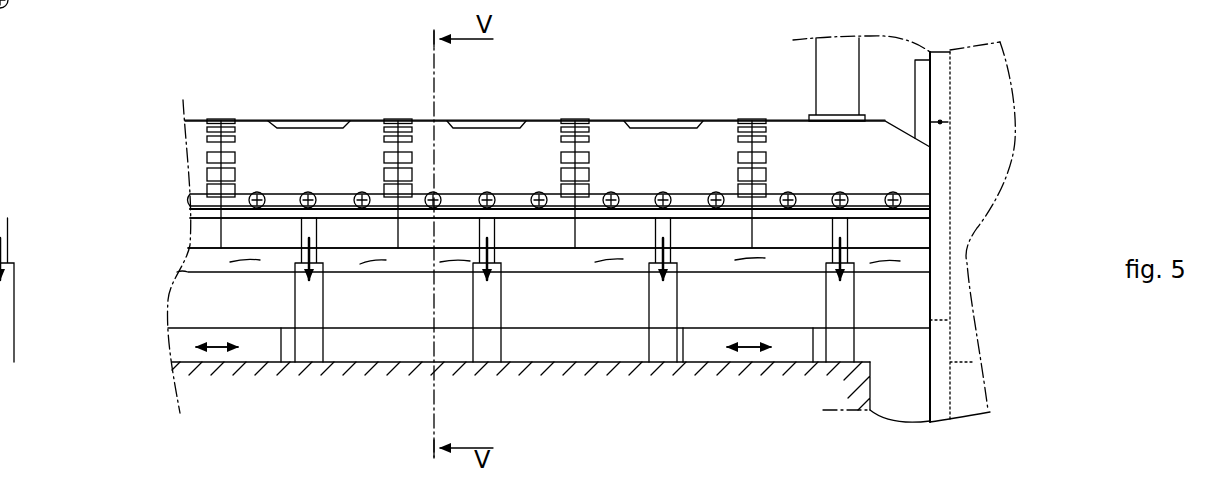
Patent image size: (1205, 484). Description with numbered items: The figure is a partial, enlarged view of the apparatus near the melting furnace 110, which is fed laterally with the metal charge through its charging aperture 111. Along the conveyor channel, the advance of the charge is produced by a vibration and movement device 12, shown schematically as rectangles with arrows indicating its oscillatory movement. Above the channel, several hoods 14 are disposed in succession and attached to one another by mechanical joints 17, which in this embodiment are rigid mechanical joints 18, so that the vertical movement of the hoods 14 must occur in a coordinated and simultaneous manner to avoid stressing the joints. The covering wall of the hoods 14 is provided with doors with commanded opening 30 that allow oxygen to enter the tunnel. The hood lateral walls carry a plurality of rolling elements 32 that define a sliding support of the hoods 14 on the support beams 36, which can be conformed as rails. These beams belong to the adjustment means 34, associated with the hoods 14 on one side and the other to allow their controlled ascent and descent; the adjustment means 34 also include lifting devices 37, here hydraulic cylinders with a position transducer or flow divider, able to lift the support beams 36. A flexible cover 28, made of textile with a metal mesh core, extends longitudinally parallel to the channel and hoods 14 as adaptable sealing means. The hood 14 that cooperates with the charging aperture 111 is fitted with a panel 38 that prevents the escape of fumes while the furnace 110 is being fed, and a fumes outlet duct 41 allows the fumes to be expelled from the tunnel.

The vibration and movement device 12 is at (235, 355).
The hood 14 is at (282, 110).
The mechanical joint 17 is at (207, 110).
The rigid mechanical joint 18 is at (221, 138).
The flexible cover 28 is at (200, 262).
The door with commanded opening 30 is at (327, 126).
The rolling element 32 is at (308, 200).
The adjustment means 34 is at (325, 347).
The support beam 36 is at (247, 212).
The lifting device 37 is at (307, 347).
The panel 38 is at (923, 100).
The fumes outlet duct 41 is at (833, 57).
The melting furnace 110 is at (1017, 55).
The charging aperture 111 is at (950, 124).